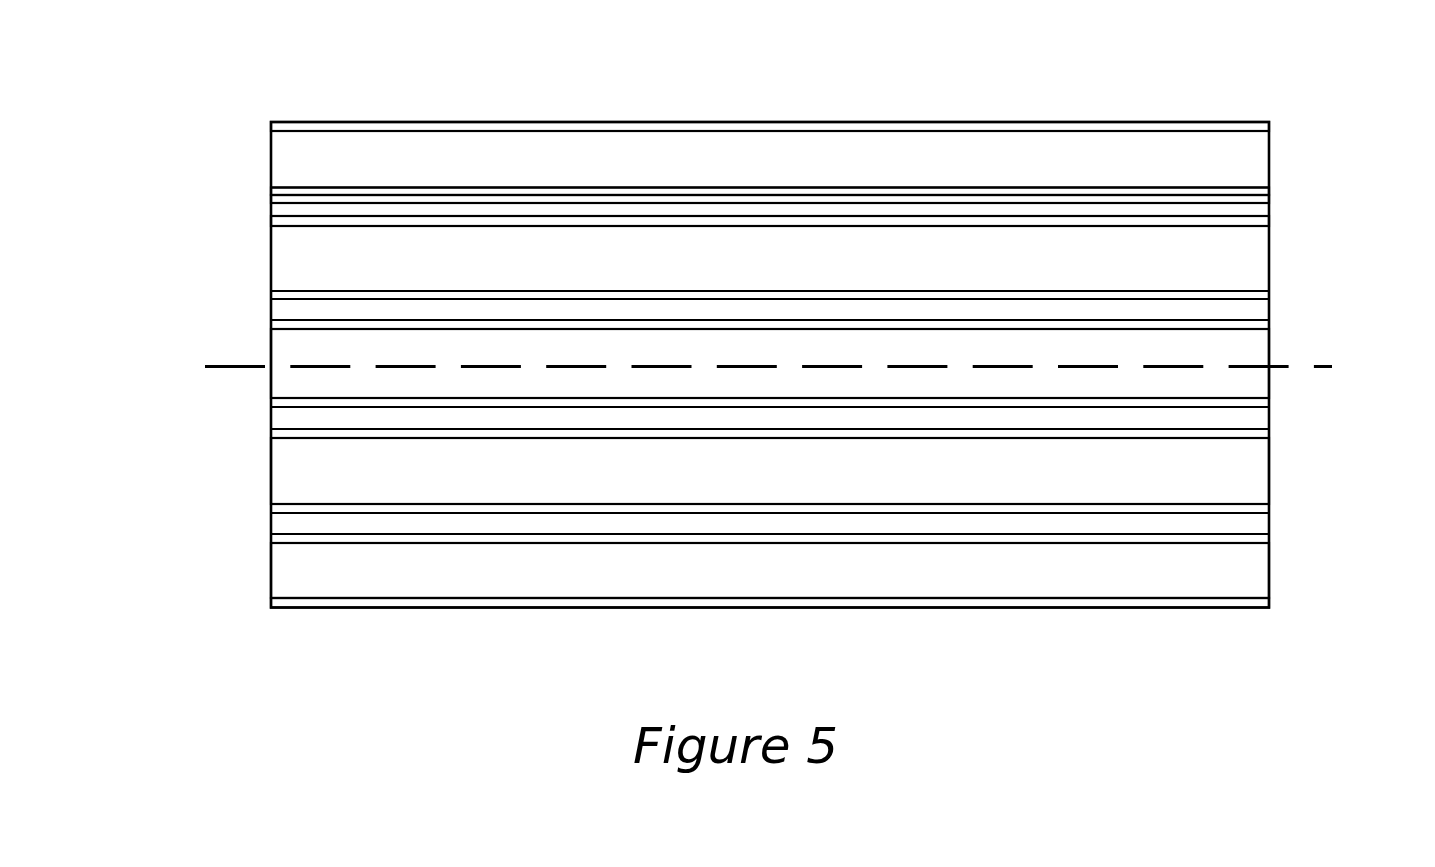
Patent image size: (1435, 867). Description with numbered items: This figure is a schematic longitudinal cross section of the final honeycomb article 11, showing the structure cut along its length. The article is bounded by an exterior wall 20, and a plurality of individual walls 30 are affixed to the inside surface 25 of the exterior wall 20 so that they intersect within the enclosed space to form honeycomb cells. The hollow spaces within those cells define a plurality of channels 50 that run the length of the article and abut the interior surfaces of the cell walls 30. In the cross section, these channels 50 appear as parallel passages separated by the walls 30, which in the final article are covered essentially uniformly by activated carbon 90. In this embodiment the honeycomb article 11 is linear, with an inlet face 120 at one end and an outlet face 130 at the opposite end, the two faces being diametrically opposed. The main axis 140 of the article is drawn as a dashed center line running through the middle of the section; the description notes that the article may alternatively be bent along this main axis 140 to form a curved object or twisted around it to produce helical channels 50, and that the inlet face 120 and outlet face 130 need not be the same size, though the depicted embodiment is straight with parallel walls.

The honeycomb article 11 is at (937, 99).
The exterior wall 20 is at (283, 127).
The inside surface 25 is at (403, 130).
The individual walls 30 is at (275, 202).
The channels 50 is at (290, 383).
The activated carbon 90 is at (270, 190).
The inlet face 120 is at (272, 567).
The outlet face 130 is at (1270, 477).
The main axis 140 is at (1285, 363).